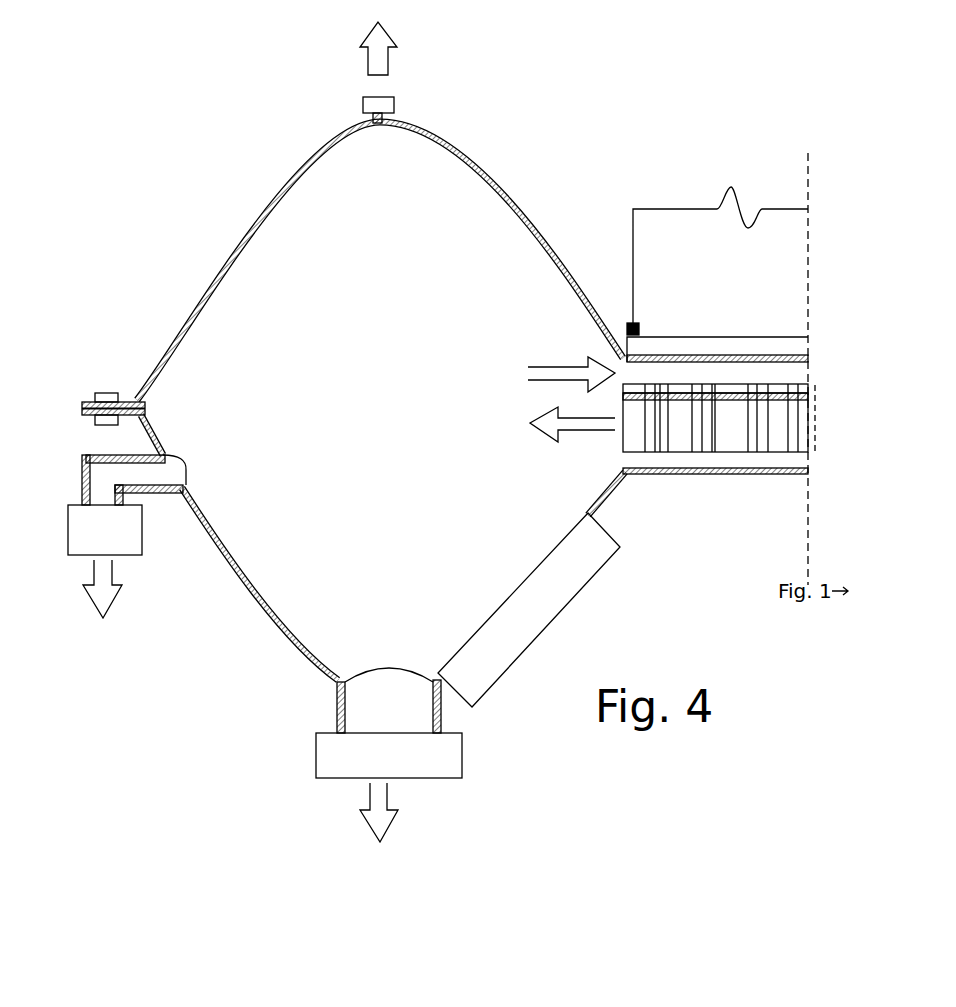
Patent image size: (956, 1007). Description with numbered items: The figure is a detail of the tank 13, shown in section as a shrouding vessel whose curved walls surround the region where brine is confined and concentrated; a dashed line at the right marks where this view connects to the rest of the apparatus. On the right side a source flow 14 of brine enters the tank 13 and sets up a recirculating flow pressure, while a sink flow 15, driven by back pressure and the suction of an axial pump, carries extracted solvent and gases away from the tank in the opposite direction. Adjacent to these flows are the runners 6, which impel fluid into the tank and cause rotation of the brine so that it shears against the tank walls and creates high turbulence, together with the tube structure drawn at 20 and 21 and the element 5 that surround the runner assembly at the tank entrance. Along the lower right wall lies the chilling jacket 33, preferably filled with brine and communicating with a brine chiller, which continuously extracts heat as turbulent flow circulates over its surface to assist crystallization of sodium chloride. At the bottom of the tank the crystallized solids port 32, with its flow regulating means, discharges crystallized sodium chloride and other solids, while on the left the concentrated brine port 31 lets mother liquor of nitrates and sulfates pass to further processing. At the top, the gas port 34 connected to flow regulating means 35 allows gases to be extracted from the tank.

The tank 13 is at (383, 411).
The means for regulating flow 35 is at (394, 98).
The gas port 34 is at (383, 117).
The concentrated brine port 31 is at (125, 536).
The crystallized solids port 32 is at (389, 755).
The chilling jacket 33 is at (529, 610).
The sink flow 15 is at (554, 374).
The source flow 14 is at (554, 424).
The outer tube 20 is at (763, 337).
The inner tube wall 21 is at (725, 352).
The filter element 5 is at (677, 392).
The runners 6 is at (727, 390).